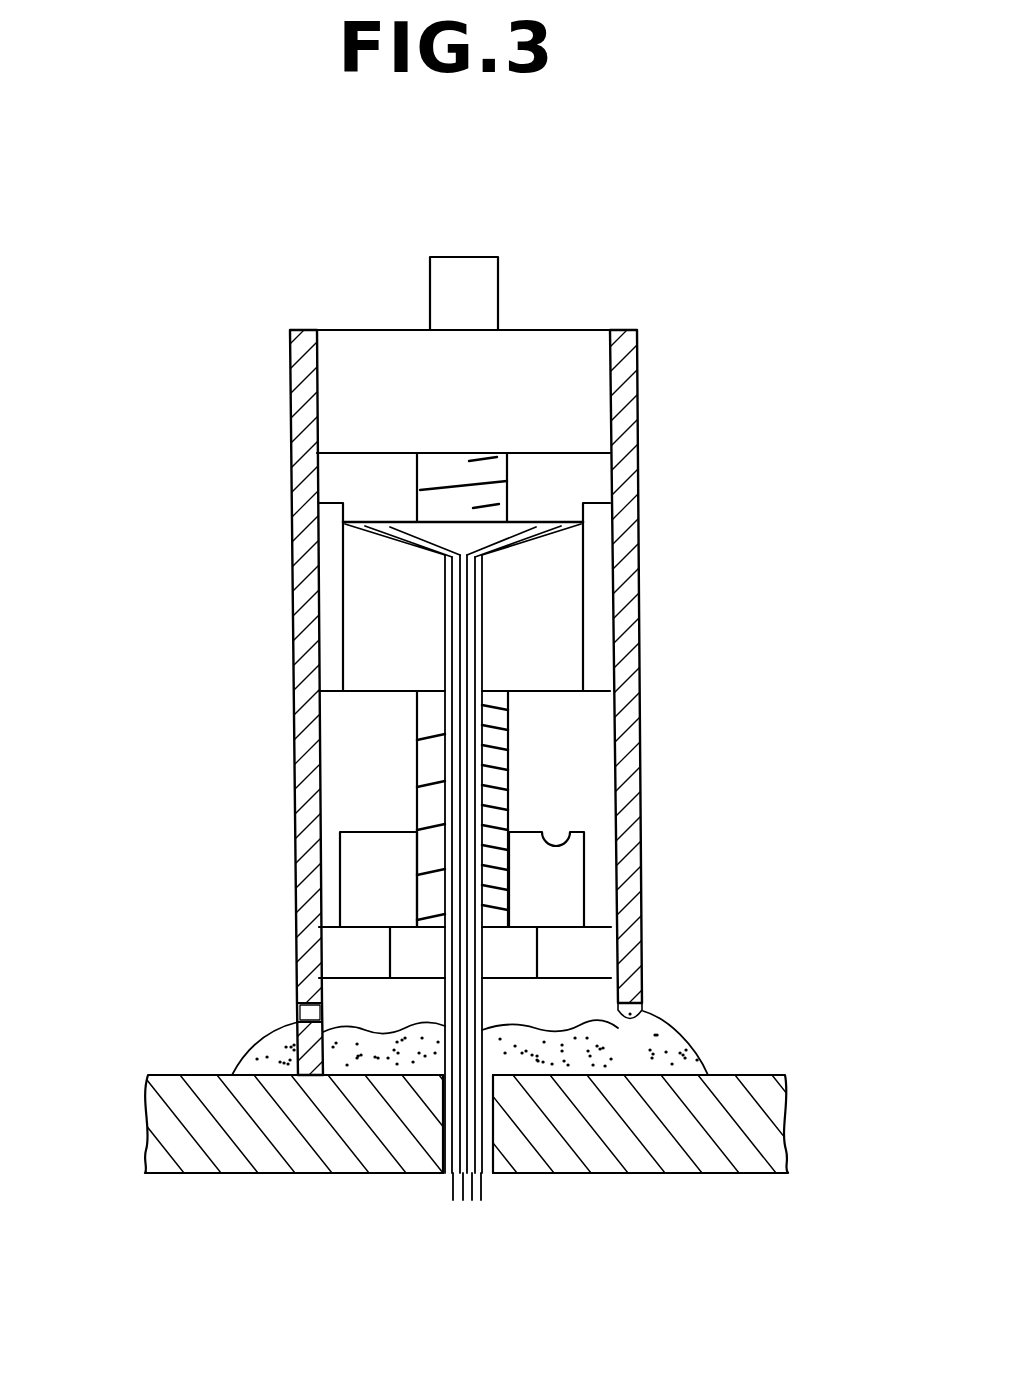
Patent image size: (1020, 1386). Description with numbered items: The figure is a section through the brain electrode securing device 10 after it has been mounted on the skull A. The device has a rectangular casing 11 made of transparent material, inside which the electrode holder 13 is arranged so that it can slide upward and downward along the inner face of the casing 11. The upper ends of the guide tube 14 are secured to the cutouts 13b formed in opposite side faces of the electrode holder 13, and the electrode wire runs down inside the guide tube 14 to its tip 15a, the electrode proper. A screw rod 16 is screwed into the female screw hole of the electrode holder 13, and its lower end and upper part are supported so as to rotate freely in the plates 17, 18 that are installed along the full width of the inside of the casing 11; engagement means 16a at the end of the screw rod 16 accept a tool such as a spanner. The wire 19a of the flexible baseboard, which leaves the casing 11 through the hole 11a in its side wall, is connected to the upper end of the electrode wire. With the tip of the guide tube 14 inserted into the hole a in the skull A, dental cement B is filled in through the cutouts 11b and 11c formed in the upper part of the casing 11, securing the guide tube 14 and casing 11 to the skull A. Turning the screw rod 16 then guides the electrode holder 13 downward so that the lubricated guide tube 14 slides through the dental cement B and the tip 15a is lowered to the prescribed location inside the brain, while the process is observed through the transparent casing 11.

The brain electrode securing device 10 is at (260, 560).
The casing 11 is at (290, 798).
The hole 11a is at (562, 847).
The cutout 11b is at (647, 1006).
The cutout 11c is at (297, 1015).
The electrode holder 13 is at (592, 556).
The cutout 13b is at (360, 650).
The guide tube 14 is at (483, 616).
The tip (electrode) 15a is at (483, 1183).
The screw rod 16 is at (493, 472).
The engagement means 16a is at (491, 286).
The plate 17 is at (555, 942).
The plate 18 is at (590, 349).
The wire 19a is at (397, 538).
The skull A is at (267, 1093).
The dental cement B is at (677, 1048).
The hole a is at (443, 1140).